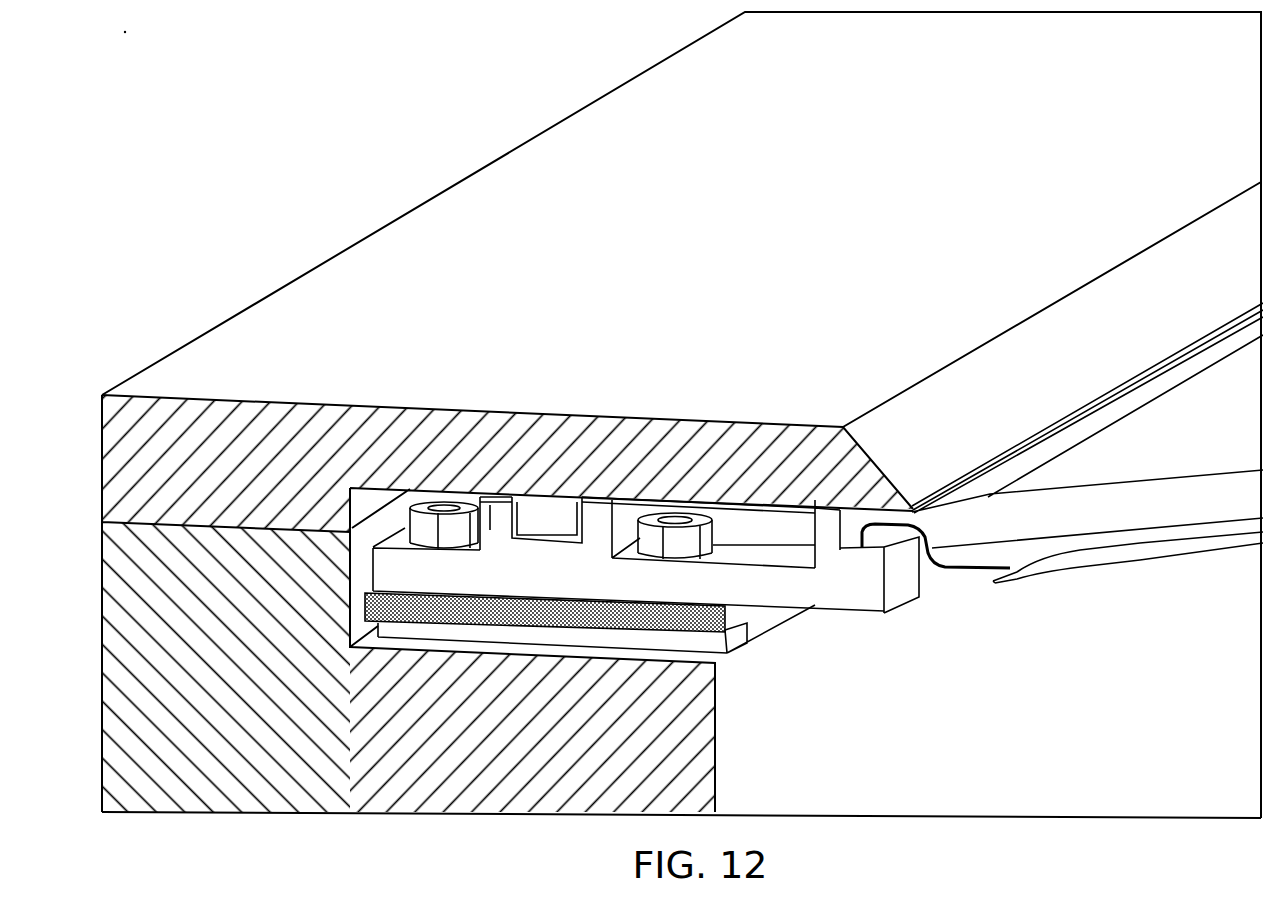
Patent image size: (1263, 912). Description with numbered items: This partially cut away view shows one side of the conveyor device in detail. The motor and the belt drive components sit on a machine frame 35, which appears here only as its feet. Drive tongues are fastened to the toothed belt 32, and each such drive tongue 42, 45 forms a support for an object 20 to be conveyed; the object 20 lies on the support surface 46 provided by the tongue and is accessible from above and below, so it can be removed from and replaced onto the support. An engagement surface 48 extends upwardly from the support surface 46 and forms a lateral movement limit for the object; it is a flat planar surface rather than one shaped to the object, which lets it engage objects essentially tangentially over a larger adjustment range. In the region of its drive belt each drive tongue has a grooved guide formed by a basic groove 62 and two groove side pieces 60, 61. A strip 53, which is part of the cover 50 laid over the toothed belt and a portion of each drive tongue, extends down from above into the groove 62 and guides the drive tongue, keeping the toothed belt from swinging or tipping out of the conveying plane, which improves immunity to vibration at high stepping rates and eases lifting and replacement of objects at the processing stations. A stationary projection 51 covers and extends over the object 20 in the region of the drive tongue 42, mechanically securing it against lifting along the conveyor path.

The cover 50 is at (455, 210).
The projection 51 is at (850, 465).
The machine frame 35 is at (395, 790).
The drive tongue 42 is at (757, 583).
The strip 53 is at (540, 510).
The basic groove 62 is at (542, 543).
The groove side piece 60 is at (493, 530).
The drive tongue 45 is at (426, 505).
The groove side piece 61 is at (587, 542).
The support surface 46 is at (845, 545).
The engagement surface 48 is at (843, 535).
The object 20 is at (1120, 553).
The toothed belt 32 is at (714, 640).